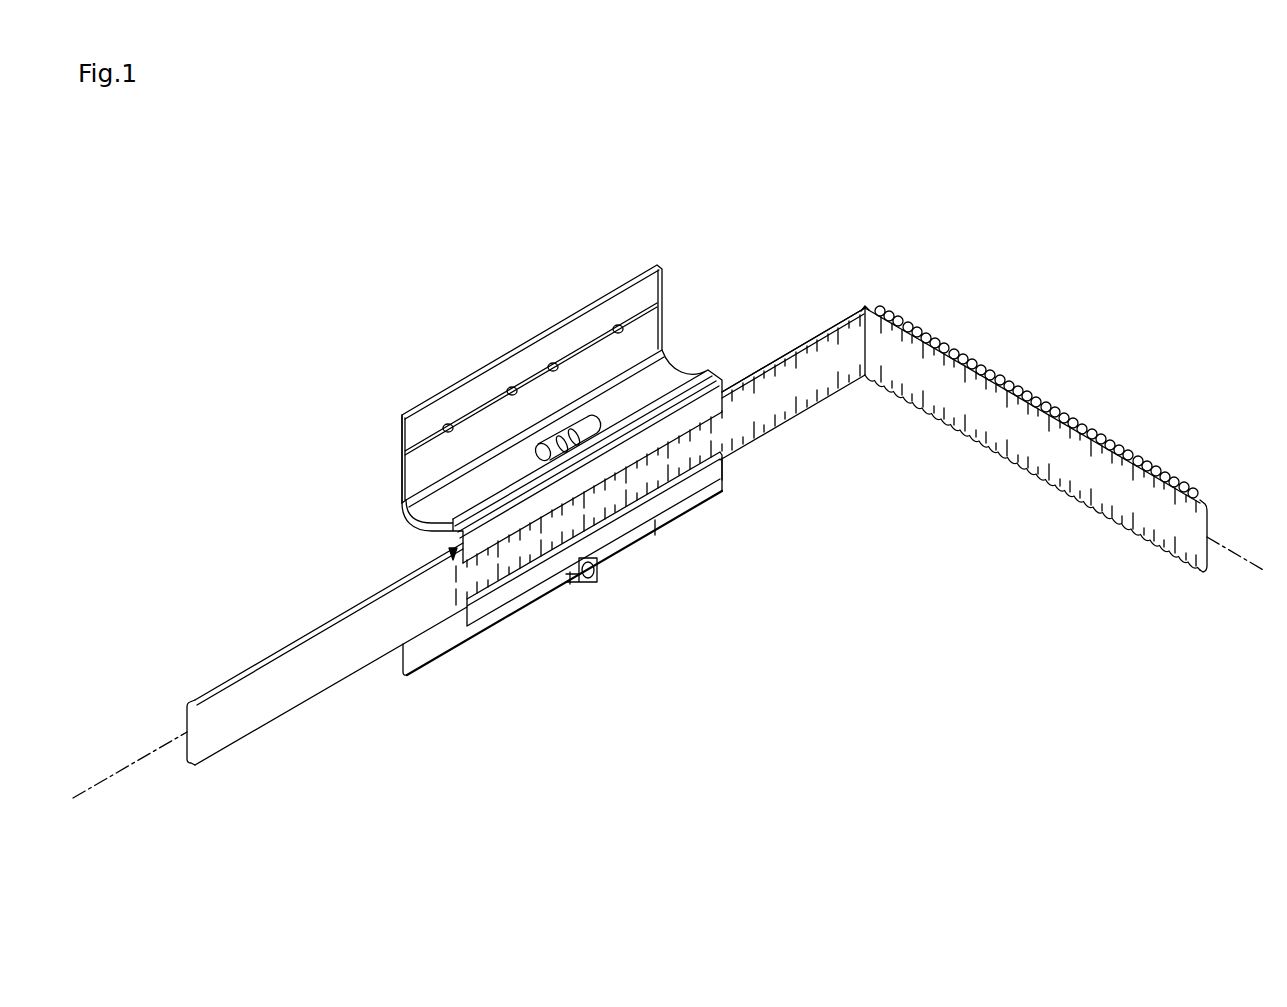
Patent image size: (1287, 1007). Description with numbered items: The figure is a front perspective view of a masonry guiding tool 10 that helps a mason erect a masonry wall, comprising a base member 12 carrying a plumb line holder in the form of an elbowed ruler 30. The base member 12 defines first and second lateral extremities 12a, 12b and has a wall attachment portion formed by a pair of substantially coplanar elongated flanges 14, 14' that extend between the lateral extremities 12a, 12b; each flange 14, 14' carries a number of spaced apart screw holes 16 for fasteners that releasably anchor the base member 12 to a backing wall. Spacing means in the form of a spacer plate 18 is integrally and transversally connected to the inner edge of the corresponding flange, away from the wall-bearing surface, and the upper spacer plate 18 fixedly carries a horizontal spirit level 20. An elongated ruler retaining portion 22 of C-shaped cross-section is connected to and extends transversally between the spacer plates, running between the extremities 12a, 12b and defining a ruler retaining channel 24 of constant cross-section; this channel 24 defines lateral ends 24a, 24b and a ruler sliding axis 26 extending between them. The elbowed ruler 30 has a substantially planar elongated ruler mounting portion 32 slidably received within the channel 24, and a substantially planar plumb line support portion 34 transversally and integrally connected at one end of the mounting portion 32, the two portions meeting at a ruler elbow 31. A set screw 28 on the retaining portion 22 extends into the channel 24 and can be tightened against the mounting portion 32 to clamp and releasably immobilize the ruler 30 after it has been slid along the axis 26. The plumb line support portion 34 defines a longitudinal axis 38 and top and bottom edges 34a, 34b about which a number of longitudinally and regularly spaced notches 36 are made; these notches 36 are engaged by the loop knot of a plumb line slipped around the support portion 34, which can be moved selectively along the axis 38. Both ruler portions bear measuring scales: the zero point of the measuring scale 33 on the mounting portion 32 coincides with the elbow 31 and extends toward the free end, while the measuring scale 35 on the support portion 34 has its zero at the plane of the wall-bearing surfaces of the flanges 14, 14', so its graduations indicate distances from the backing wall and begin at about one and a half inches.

The masonry guiding tool 10 is at (769, 182).
The base member 12 is at (525, 377).
The first lateral extremity 12a is at (400, 430).
The second lateral extremity 12b is at (562, 343).
The elongated flange 14 is at (487, 386).
The elongated flange 14' is at (527, 599).
The screw holes 16 is at (508, 390).
The spacer plate 18 is at (450, 546).
The horizontal spirit level 20 is at (513, 432).
The ruler retaining portion 22 is at (594, 542).
The ruler retaining channel 24 is at (599, 553).
The lateral end of ruler retaining channel 24a is at (453, 617).
The lateral end of ruler retaining channel 24b is at (720, 443).
The ruler sliding axis 26 is at (140, 760).
The set screw 28 is at (593, 576).
The elbowed ruler 30 is at (469, 559).
The ruler elbow 31 is at (866, 306).
The ruler mounting portion 32 is at (218, 748).
The measuring scale 33 is at (803, 380).
The plumb line support portion 34 is at (1050, 437).
The top edge 34a is at (1164, 477).
The bottom edge 34b is at (1118, 518).
The measuring scale 35 is at (965, 393).
The notches 36 is at (1127, 463).
The longitudinal axis 38 is at (1250, 560).